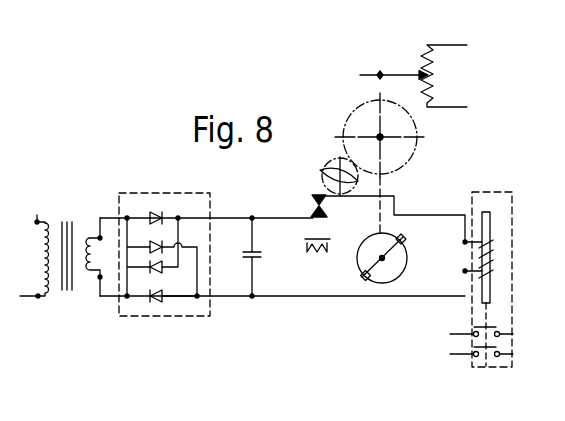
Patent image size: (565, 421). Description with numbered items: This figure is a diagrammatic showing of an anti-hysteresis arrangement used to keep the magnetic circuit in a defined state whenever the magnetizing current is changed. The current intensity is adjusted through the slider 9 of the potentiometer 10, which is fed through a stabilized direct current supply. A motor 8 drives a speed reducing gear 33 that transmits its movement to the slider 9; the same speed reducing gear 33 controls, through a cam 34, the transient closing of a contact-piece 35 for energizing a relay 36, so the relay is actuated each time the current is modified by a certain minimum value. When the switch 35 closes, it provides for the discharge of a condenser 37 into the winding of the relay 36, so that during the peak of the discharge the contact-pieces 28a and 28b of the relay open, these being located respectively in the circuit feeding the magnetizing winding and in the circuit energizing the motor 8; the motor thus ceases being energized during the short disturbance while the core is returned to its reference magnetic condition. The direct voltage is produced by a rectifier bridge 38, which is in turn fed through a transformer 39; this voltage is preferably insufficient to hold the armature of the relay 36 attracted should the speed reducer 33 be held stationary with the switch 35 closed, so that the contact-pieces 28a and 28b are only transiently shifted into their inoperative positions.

The motor 8 is at (358, 264).
The slider 9 is at (401, 74).
The potentiometer 10 is at (433, 92).
The contact-piece 28a is at (472, 327).
The contact-piece 28b is at (472, 348).
The speed reducing gear 33 is at (417, 150).
The cam 34 is at (319, 175).
The contact-piece 35 is at (325, 208).
The relay 36 is at (512, 270).
The condenser 37 is at (261, 257).
The rectifier bridge 38 is at (123, 192).
The transformer 39 is at (89, 237).